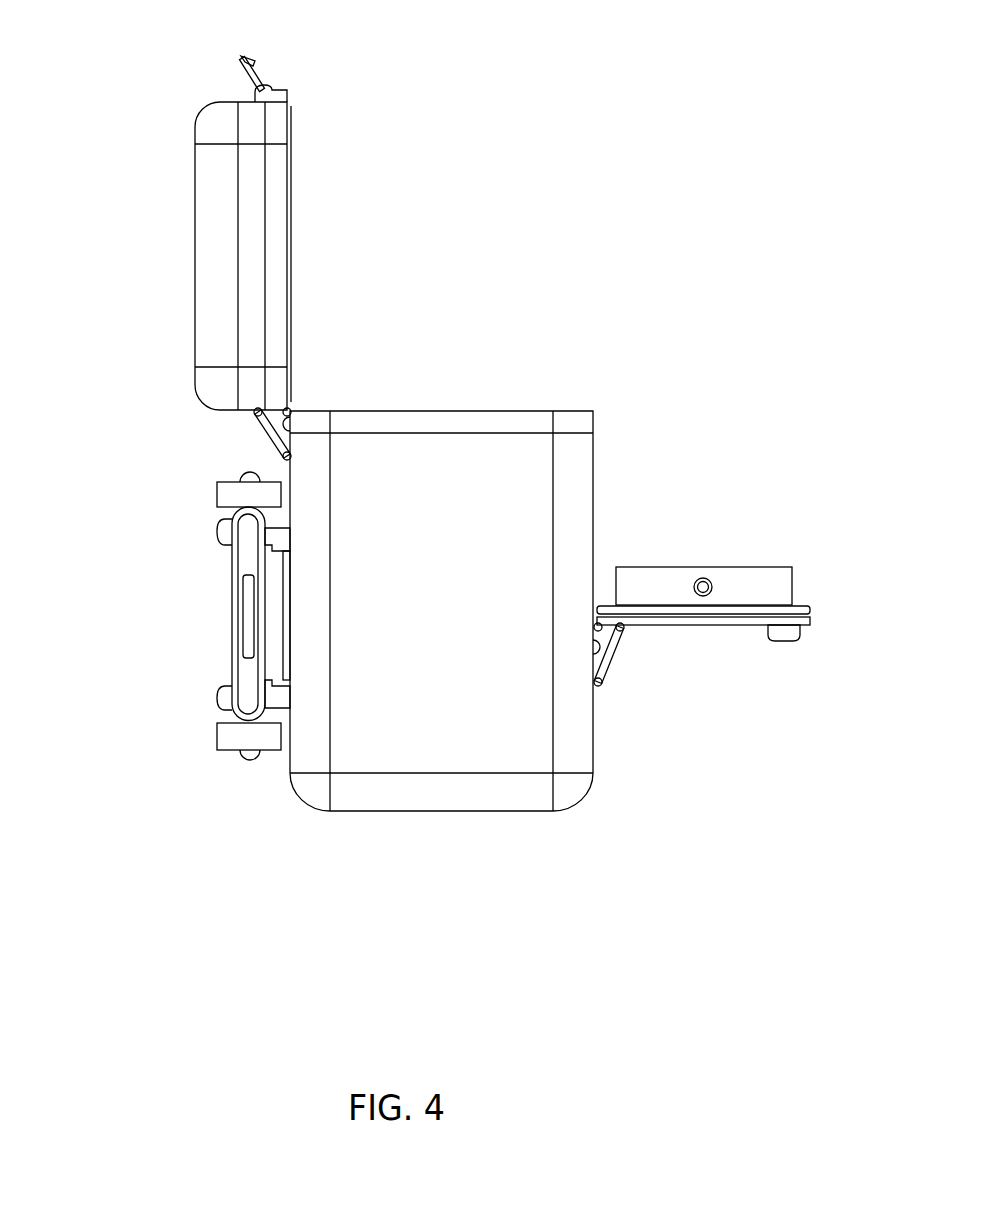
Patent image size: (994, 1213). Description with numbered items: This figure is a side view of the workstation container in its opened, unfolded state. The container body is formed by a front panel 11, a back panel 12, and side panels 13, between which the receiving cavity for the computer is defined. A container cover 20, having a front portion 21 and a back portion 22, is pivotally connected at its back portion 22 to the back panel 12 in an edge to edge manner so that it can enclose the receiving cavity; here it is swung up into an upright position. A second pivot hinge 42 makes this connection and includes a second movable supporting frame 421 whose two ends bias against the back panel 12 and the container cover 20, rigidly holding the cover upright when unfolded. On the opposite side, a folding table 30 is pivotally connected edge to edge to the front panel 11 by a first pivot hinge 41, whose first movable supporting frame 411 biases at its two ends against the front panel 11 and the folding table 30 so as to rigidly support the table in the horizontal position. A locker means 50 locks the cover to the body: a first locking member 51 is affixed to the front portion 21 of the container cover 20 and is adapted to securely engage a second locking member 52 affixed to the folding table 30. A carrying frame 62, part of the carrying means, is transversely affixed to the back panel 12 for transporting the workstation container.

The front panel 11 is at (580, 715).
The back panel 12 is at (310, 722).
The side panel 13 is at (450, 495).
The container cover 20 is at (212, 278).
The front portion 21 is at (276, 127).
The back portion 22 is at (213, 378).
The folding table 30 is at (743, 588).
The first pivot hinge 41 is at (712, 761).
The first movable supporting frame 411 is at (606, 662).
The second pivot hinge 42 is at (168, 423).
The second movable supporting frame 421 is at (265, 435).
The locker means 50 is at (341, 51).
The first locking member 51 is at (262, 88).
The second locking member 52 is at (785, 630).
The carrying frame 62 is at (200, 645).